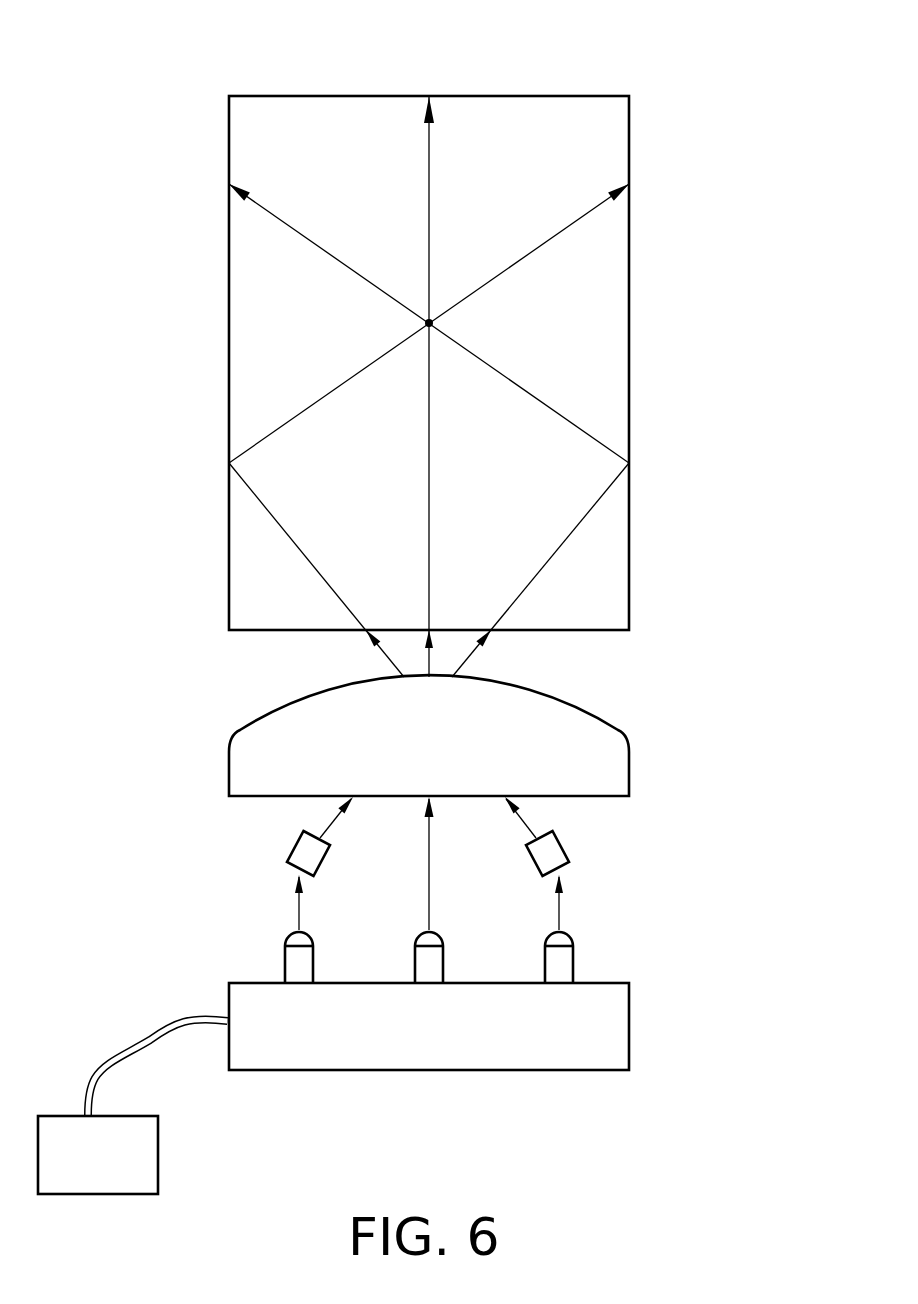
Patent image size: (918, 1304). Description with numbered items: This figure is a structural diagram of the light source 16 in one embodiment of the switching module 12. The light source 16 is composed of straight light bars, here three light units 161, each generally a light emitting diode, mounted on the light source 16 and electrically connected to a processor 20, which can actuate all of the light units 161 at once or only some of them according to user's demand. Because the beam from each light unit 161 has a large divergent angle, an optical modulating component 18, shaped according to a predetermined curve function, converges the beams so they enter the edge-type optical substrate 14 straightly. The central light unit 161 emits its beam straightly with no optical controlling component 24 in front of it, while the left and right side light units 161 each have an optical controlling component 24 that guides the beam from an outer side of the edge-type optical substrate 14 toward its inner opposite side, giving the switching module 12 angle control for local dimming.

The switching module 12 is at (689, 56).
The edge-type optical substrate 14 is at (623, 282).
The light source 16 is at (621, 1021).
The light unit 161 is at (286, 958).
The optical modulating component 18 is at (621, 767).
The processor 20 is at (150, 1152).
The optical controlling component 24 is at (298, 855).